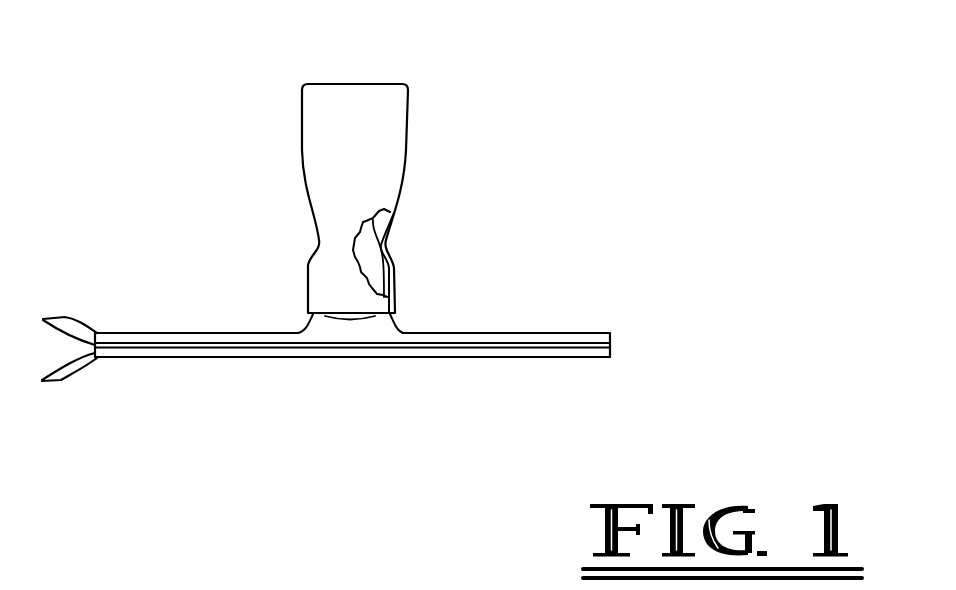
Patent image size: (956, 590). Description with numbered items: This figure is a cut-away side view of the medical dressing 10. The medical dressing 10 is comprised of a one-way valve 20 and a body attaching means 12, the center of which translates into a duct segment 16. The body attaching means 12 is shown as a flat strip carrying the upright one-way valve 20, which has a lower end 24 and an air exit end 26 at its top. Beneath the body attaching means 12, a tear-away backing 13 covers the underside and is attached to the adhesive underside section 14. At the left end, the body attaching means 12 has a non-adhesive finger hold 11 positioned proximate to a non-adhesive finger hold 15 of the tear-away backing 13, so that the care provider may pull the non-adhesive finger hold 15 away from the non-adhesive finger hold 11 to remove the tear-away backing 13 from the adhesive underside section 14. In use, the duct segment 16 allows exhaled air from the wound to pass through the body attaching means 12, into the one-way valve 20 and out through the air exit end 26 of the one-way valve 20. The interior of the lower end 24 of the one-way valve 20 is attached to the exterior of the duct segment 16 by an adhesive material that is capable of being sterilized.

The medical dressing 10 is at (458, 20).
The non-adhesive finger hold 11 is at (72, 320).
The body attaching means 12 is at (588, 303).
The tear-away backing 13 is at (592, 423).
The adhesive underside section 14 is at (477, 462).
The non-adhesive finger hold 15 is at (67, 445).
The duct segment 16 is at (505, 270).
The one-way valve 20 is at (394, 171).
The lower end 24 is at (421, 266).
The air exit end 26 is at (330, 50).